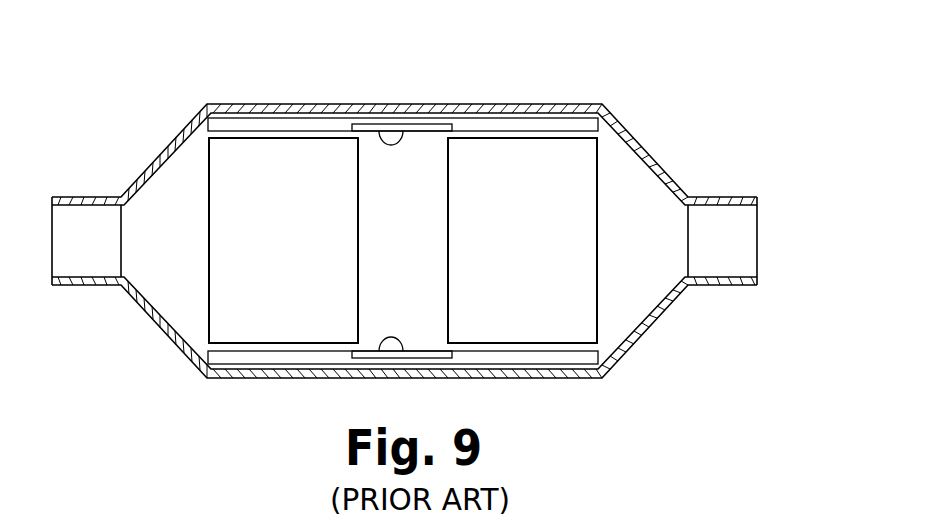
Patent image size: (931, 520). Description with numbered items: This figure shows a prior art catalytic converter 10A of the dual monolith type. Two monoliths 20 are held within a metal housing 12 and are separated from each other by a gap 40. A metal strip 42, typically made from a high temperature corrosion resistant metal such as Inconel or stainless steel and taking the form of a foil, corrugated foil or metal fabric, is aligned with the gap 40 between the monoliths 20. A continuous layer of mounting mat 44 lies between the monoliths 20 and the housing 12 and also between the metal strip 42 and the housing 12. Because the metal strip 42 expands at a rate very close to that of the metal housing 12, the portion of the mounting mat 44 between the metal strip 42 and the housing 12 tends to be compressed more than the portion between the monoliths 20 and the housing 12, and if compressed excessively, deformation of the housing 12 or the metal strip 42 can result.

The catalytic converter 10A is at (404, 218).
The metal housing 12 is at (307, 104).
The monolith 20 is at (300, 254).
The gap 40 is at (427, 247).
The metal strip 42 is at (400, 137).
The mounting mat 44 is at (250, 124).